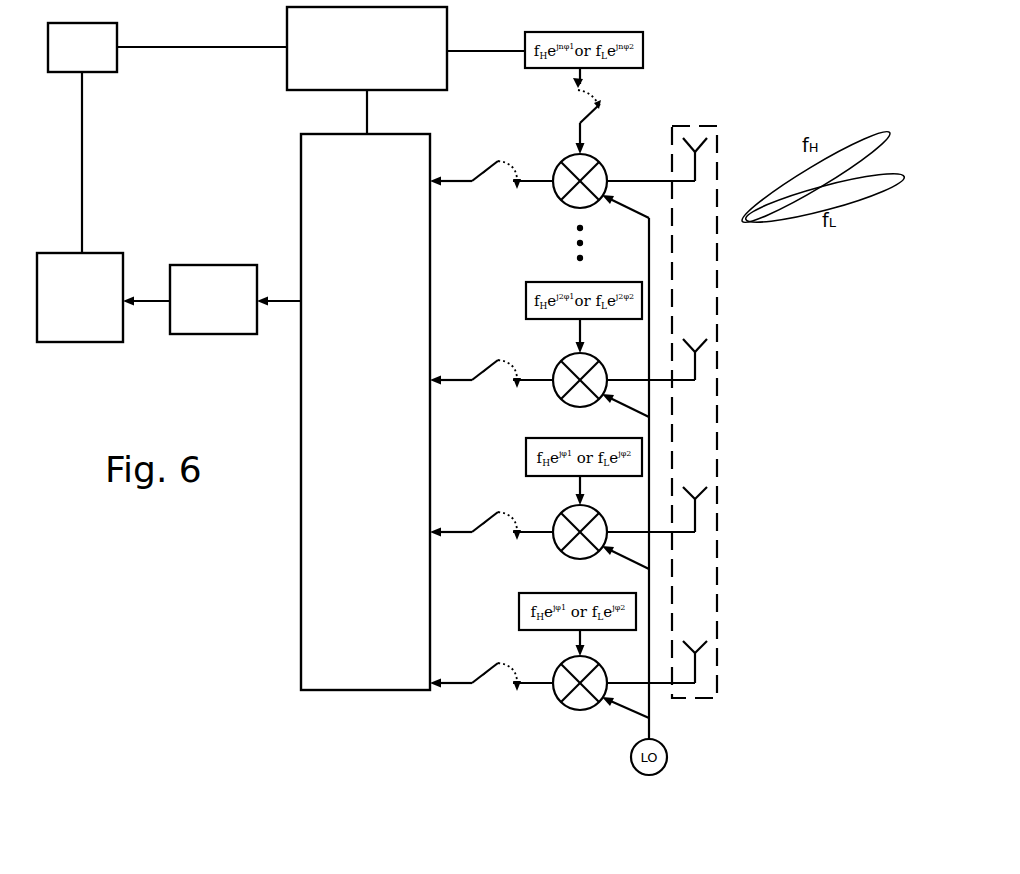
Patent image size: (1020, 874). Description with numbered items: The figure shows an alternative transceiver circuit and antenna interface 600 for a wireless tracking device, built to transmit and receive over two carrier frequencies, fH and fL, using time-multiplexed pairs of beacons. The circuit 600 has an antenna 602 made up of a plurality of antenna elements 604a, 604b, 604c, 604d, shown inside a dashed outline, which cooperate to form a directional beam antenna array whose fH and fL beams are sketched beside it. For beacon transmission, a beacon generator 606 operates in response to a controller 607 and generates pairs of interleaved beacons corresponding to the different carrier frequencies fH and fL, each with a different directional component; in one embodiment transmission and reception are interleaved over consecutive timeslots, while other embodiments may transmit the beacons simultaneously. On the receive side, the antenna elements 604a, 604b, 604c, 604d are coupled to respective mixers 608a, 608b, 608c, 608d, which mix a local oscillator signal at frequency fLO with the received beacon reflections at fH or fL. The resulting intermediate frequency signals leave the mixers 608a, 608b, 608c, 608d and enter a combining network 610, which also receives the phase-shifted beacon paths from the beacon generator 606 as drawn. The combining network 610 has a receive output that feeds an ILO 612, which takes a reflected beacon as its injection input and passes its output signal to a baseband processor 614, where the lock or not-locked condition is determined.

The transceiver circuit and antenna interface 600 is at (768, 92).
The antenna 602 is at (670, 148).
The antenna element 604a is at (700, 152).
The antenna element 604b is at (705, 346).
The antenna element 604c is at (707, 496).
The antenna element 604d is at (700, 656).
The beacon generator 606 is at (351, 81).
The controller 607 is at (67, 68).
The mixer 608a is at (553, 188).
The mixer 608b is at (553, 388).
The mixer 608c is at (553, 540).
The mixer 608d is at (553, 697).
The combining network 610 is at (349, 445).
The ILO 612 is at (197, 321).
The baseband processor 614 is at (64, 319).